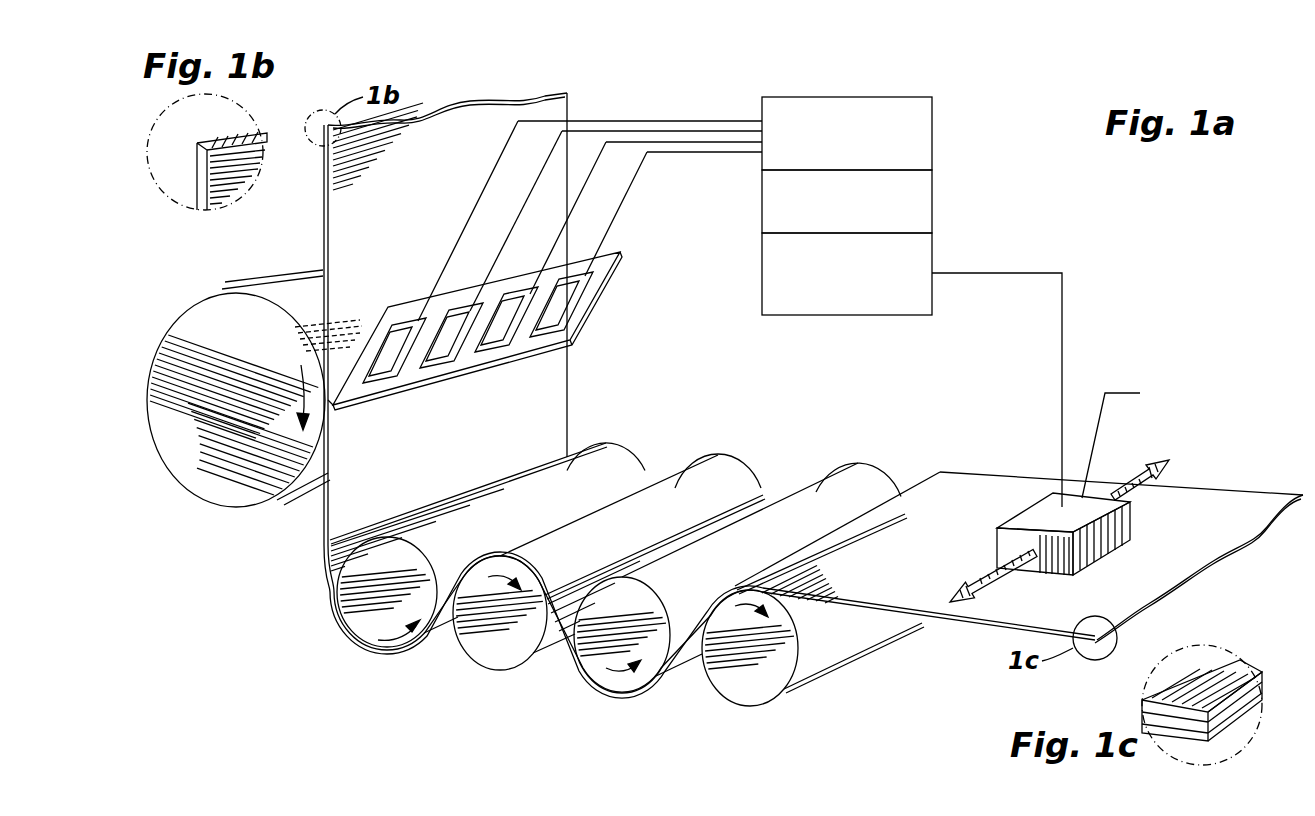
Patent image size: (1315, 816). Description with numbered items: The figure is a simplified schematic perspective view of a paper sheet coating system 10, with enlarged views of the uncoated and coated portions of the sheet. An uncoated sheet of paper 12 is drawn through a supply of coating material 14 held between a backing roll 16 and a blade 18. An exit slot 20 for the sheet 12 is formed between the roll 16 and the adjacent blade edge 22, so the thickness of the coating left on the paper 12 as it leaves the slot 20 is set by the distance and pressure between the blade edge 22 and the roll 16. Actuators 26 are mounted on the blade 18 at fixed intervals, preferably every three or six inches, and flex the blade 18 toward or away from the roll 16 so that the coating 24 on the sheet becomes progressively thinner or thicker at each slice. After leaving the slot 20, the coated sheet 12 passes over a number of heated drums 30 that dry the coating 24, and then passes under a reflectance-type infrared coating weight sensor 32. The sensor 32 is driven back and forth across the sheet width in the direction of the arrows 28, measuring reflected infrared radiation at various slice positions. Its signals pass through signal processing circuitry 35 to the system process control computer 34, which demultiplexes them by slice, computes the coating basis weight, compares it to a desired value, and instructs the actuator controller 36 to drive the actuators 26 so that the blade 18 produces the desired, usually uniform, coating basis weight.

In FIG. 1A, the paper sheet coating system 10 is at (246, 680).
In FIG. 1A, the sheet of paper 12 is at (418, 135).
In FIG. 1B, the sheet of paper 12 is at (212, 142).
In FIG. 1C, the sheet of paper 12 is at (1257, 689).
In FIG. 1A, the coating material 14 is at (320, 330).
In FIG. 1A, the backing roll 16 is at (213, 483).
In FIG. 1A, the blade 18 is at (470, 355).
In FIG. 1A, the exit slot 20 is at (338, 385).
In FIG. 1A, the blade edge 22 is at (333, 410).
In FIG. 1C, the coating 24 is at (1243, 665).
In FIG. 1A, the actuators 26 is at (566, 302).
In FIG. 1A, the arrows 28 is at (1140, 492).
In FIG. 1A, the heated drums 30 is at (627, 462).
In FIG. 1A, the reflectance-type infrared coating weight sensor 32 is at (1114, 538).
In FIG. 1A, the system process control computer 34 is at (936, 209).
In FIG. 1A, the signal processing circuitry 35 is at (800, 316).
In FIG. 1A, the actuator controller 36 is at (936, 126).